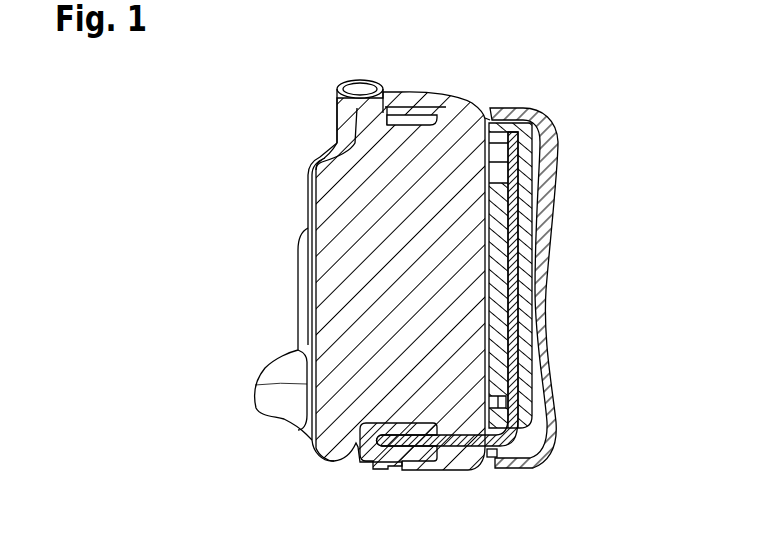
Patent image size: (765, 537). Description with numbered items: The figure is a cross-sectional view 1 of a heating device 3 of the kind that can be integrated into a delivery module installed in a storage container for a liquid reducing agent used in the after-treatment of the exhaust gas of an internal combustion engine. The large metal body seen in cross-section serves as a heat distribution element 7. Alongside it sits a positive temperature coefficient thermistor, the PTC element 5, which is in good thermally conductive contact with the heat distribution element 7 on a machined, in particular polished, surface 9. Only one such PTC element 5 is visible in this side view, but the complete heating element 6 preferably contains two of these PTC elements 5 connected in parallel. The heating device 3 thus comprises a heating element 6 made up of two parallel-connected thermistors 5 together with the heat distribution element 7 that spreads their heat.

The cross-sectional view 1 is at (254, 112).
The heating device 3 is at (624, 181).
The PTC element 5 is at (497, 301).
The heating element 6 is at (448, 289).
The heat distribution element 7 is at (337, 205).
The polished surface 9 is at (489, 238).